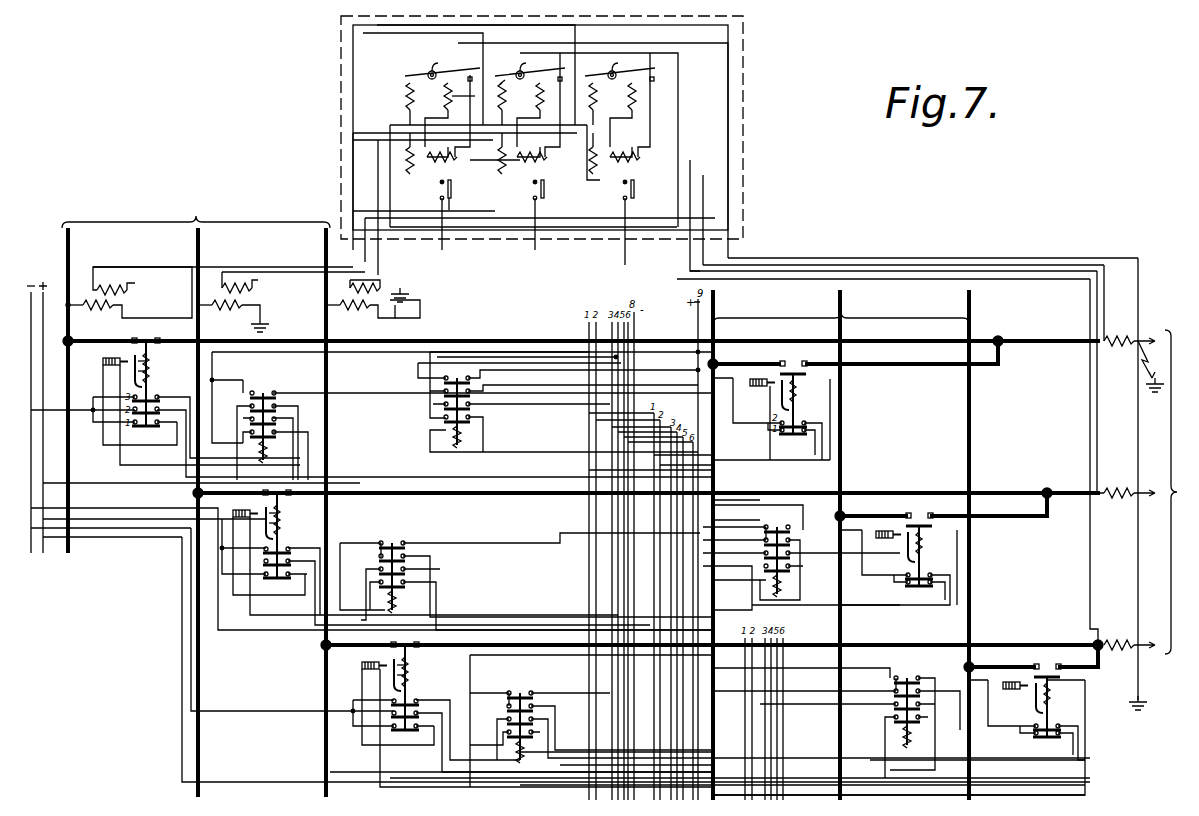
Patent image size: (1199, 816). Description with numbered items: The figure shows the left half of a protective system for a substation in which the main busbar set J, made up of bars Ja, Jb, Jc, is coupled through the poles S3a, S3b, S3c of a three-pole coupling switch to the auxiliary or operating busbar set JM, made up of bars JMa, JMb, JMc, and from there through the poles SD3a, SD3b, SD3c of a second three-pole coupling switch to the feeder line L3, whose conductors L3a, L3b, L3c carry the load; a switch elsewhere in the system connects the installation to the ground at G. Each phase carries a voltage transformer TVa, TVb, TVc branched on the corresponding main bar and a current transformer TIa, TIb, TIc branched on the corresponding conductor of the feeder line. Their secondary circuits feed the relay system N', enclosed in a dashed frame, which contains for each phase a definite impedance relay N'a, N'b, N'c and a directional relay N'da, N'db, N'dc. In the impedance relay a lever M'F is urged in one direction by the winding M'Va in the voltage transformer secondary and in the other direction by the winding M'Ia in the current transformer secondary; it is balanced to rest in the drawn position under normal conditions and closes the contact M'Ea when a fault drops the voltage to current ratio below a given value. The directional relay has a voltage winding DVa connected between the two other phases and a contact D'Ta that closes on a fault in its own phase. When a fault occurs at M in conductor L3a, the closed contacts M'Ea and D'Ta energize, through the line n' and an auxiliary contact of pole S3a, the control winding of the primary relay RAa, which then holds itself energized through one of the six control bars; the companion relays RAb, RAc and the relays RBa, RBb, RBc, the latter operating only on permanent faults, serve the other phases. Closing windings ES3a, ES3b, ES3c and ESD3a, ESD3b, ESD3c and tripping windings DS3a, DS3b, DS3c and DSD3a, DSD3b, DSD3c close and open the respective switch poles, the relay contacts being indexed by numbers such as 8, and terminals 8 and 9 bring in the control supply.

The system of relays N' is at (553, 127).
The line n' is at (540, 127).
The lever M'F is at (416, 63).
The contact M'Ea is at (446, 67).
The winding M'Va is at (397, 96).
The definite impedance relay N'a is at (440, 96).
The winding M'Ia is at (475, 96).
The definite impedance relay N'b is at (521, 96).
The definite impedance relay N'c is at (612, 96).
The winding DVa is at (405, 160).
The directional relay N'da is at (410, 171).
The contact D'Ta is at (458, 190).
The directional relay N'db is at (521, 173).
The directional relay N'dc is at (611, 173).
The main busbar set J is at (196, 213).
The main bar Ja is at (78, 390).
The main bar Jb is at (208, 512).
The main bar Jc is at (312, 512).
The contact index 8 is at (31, 412).
The terminal 9 (positive) 9 is at (43, 412).
The voltage transformer TVa is at (129, 292).
The voltage transformer TVb is at (281, 302).
The voltage transformer TVc is at (367, 299).
The conductor L3a is at (581, 347).
The conductor L3b is at (646, 486).
The conductor L3c is at (710, 637).
The feeder line L3 is at (1163, 479).
The current transformer TIa is at (1129, 332).
The current transformer TIb is at (1129, 484).
The current transformer TIc is at (1129, 636).
The fault M is at (1157, 492).
The ground G is at (1138, 711).
The auxiliary or operating busbar set JM is at (841, 312).
The auxiliary bar JMa is at (729, 543).
The auxiliary bar JMb is at (856, 543).
The auxiliary bar JMc is at (984, 543).
The coupling switch pole S3a is at (146, 373).
The opening winding DS3a is at (108, 354).
The closing winding ES3a is at (165, 366).
The coupling switch pole S3b is at (277, 525).
The opening winding DS3b is at (238, 506).
The closing winding ES3b is at (296, 518).
The coupling switch pole S3c is at (405, 677).
The opening winding DS3c is at (366, 658).
The closing winding ES3c is at (424, 670).
The primary relay RAa is at (461, 416).
The primary relay RBa is at (550, 402).
The primary relay RAb is at (526, 578).
The primary relay RAc is at (780, 719).
The primary relay RBb is at (801, 557).
The primary relay RBc is at (899, 719).
The coupling switch pole SD3a is at (855, 385).
The opening winding DSD3a is at (760, 376).
The closing winding ESD3a is at (813, 388).
The coupling switch pole SD3b is at (943, 537).
The opening winding DSD3b is at (883, 528).
The closing winding ESD3b is at (939, 540).
The coupling switch pole SD3c is at (1033, 688).
The opening winding DSD3c is at (1009, 679).
The closing winding ESD3c is at (1067, 691).